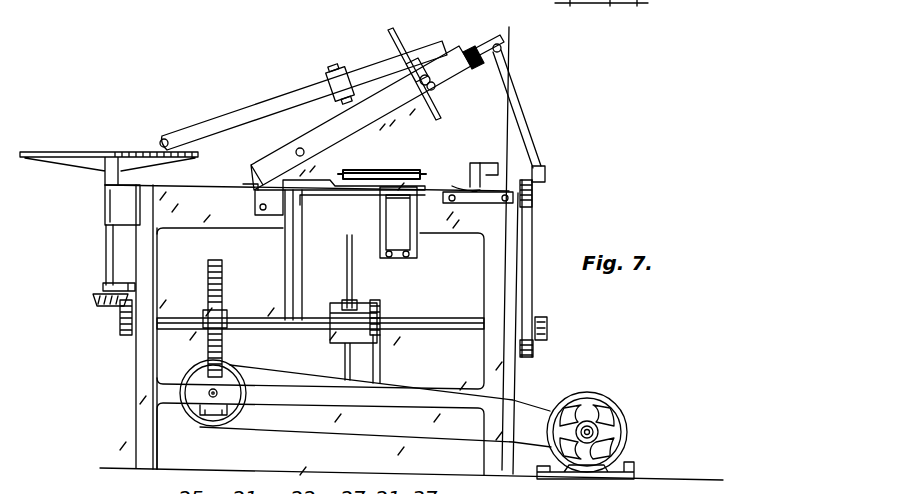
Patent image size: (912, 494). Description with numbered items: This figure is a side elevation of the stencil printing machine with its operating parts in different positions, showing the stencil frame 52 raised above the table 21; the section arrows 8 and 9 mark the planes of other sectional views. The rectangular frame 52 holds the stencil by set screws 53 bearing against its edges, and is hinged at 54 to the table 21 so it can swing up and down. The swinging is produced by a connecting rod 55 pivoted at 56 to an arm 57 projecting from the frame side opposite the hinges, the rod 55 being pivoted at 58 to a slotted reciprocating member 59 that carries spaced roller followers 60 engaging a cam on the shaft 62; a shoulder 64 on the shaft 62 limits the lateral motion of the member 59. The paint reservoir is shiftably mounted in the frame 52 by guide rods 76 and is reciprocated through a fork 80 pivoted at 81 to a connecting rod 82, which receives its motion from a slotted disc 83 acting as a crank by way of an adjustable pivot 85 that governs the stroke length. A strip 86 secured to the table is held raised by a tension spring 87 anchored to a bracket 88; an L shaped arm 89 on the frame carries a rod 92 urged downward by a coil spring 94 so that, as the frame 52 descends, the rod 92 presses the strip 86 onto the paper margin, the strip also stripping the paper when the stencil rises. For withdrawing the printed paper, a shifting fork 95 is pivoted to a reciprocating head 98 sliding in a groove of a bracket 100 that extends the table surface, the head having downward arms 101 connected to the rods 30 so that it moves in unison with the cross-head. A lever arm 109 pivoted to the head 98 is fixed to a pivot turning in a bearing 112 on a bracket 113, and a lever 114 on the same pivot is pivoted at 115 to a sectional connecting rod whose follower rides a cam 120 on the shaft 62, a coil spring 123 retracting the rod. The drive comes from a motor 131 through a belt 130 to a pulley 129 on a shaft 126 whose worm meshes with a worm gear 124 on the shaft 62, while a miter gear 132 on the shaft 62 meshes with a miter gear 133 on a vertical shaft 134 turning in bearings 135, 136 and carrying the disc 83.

The section line 8 is at (478, 19).
The section line 9 is at (482, 482).
The table 21 is at (216, 184).
The rods 30 is at (395, 260).
The frame 52 is at (376, 120).
The set screws 53 is at (422, 76).
The hinges 54 is at (246, 190).
The connecting rod 55 is at (540, 120).
The pivot 56 is at (502, 50).
The arm 57 is at (478, 75).
The pivot 58 is at (548, 172).
The slotted reciprocating member 59 is at (534, 218).
The followers 60 is at (555, 350).
The shaft 62 is at (440, 318).
The shoulder 64 is at (548, 325).
The guide rods 76 is at (482, 44).
The fork 80 is at (372, 68).
The pivot 81 is at (332, 72).
The connecting rod 82 is at (265, 102).
The rotary member 83 is at (75, 160).
The pivot 85 is at (168, 140).
The strip 86 is at (450, 186).
The tension spring 87 is at (470, 172).
The bracket 88 is at (490, 163).
The L shaped arm 89 is at (392, 40).
The rod 92 is at (404, 31).
The coil spring 94 is at (378, 110).
The shifting fork 95 is at (372, 170).
The reciprocating head 98 is at (352, 205).
The bracket 100 is at (417, 240).
The arms 101 is at (378, 260).
The lever arm 109 is at (318, 178).
The bearing 112 is at (285, 288).
The bracket 113 is at (258, 215).
The lever 114 is at (333, 310).
The pivot 115 is at (327, 340).
The cam 120 is at (380, 364).
The coil spring 123 is at (382, 306).
The worm gear 124 is at (208, 290).
The shaft 126 is at (218, 393).
The pulley 129 is at (252, 368).
The belt 130 is at (530, 403).
The motor 131 is at (606, 400).
The miter gear 132 is at (122, 332).
The miter gear 133 is at (105, 308).
The shaft 134 is at (105, 253).
The bearing 135 is at (102, 288).
The bearing 136 is at (104, 218).